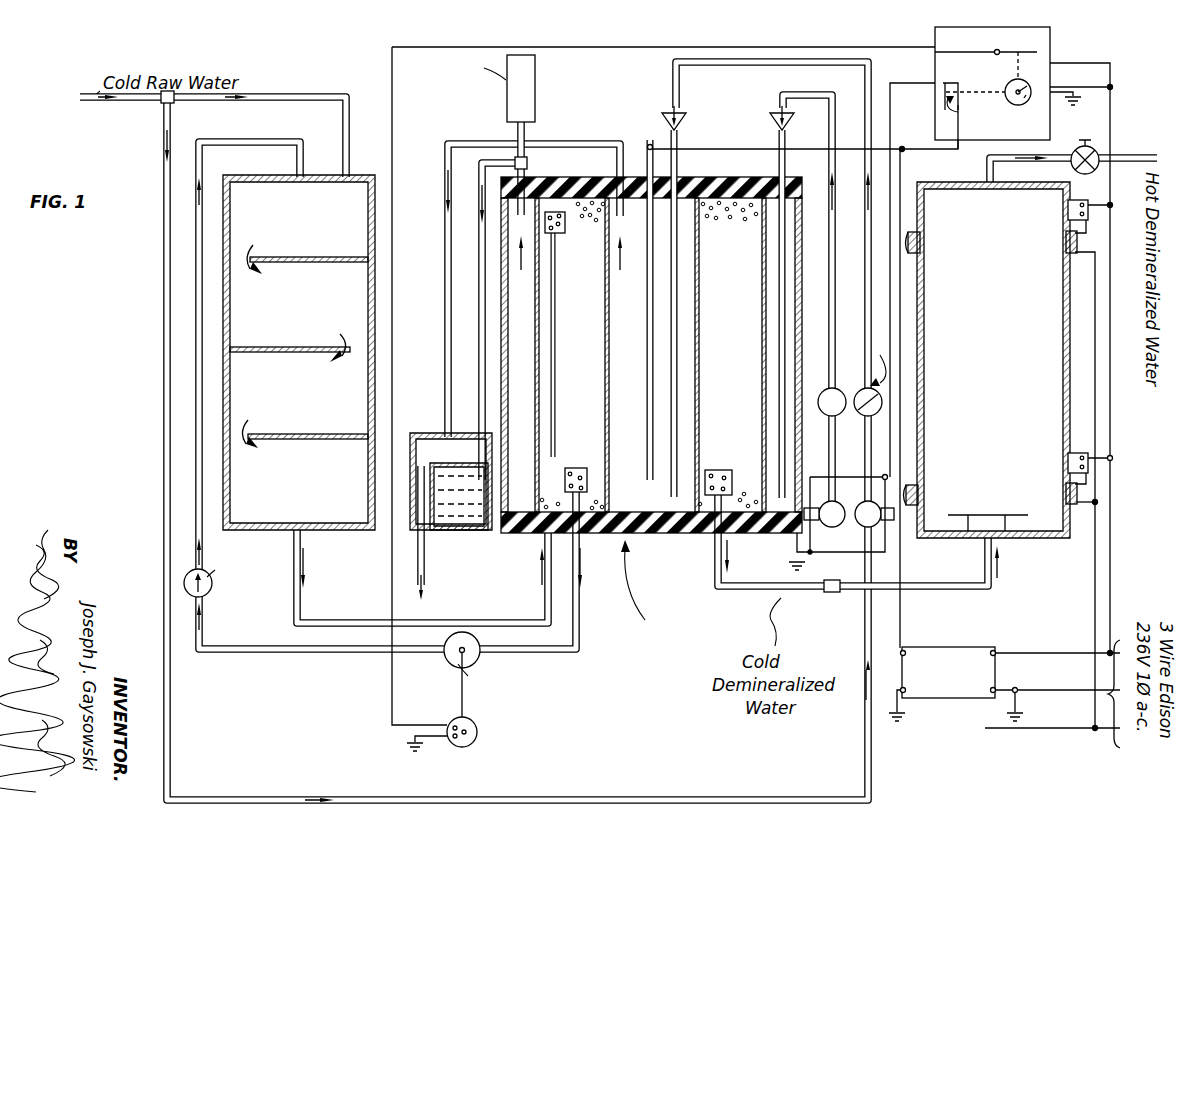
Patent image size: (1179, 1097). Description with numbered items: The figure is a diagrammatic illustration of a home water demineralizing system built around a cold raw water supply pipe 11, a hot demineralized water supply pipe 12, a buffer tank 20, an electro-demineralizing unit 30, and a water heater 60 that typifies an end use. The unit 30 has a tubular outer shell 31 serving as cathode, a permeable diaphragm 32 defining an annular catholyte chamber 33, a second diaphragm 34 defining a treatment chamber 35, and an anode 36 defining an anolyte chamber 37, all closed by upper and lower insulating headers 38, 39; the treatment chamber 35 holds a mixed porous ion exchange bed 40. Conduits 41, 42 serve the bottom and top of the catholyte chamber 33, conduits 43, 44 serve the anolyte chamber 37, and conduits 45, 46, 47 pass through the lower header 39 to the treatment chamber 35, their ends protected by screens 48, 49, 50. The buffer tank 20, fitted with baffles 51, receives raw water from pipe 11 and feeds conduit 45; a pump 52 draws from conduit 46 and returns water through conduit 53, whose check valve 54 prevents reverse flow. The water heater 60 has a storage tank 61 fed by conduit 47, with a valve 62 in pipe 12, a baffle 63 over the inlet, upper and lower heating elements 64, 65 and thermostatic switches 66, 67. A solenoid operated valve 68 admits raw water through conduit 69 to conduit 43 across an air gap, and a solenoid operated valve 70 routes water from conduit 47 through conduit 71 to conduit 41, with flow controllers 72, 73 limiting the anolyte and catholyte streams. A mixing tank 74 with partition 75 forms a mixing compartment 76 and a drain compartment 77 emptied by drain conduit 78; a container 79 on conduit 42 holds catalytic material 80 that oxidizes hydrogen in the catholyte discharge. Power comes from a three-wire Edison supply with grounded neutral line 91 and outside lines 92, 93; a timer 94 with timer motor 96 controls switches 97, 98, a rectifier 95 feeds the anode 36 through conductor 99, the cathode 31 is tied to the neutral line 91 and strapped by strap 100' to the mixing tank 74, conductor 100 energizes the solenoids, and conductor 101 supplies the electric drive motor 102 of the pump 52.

The cold raw water supply pipe 11 is at (296, 97).
The hot demineralized water supply pipe 12 is at (986, 176).
The buffer tank 20 is at (260, 166).
The electro-demineralizing unit 30 is at (727, 168).
The tubular outer shell 31 is at (798, 338).
The tubular permeable diaphragm 32 is at (762, 290).
The catholyte chamber 33 is at (540, 320).
The tubular permeable diaphragm 34 is at (699, 290).
The treatment chamber 35 is at (582, 366).
The anode 36 is at (648, 340).
The anolyte chamber 37 is at (622, 317).
The upper insulating header 38 is at (772, 180).
The lower insulating header 39 is at (647, 533).
The porous ion exchange bed 40 is at (592, 216).
The conduit 41 is at (774, 126).
The conduit 42 is at (526, 175).
The conduit 43 is at (666, 128).
The conduit 44 is at (619, 178).
The conduit 45 is at (298, 604).
The conduit 46 is at (584, 610).
The conduit 47 is at (938, 587).
The screen 48 is at (552, 238).
The screen 49 is at (588, 478).
The screen 50 is at (711, 466).
The baffles 51 is at (324, 256).
The pump 52 is at (447, 662).
The conduit 53 is at (197, 382).
The check valve 54 is at (202, 596).
The water heater 60 is at (996, 394).
The storage tank 61 is at (922, 326).
The valve 62 is at (1082, 148).
The baffle 63 is at (990, 514).
The upper heating element 64 is at (920, 238).
The lower heating element 65 is at (917, 488).
The upper thermostatic switch 66 is at (1068, 207).
The lower thermostatic switch 67 is at (1066, 462).
The solenoid operated valve 68 is at (864, 524).
The conduit 69 is at (673, 95).
The solenoid operated valve 70 is at (828, 504).
The conduit 71 is at (781, 100).
The flow controller 72 is at (868, 390).
The flow controller 73 is at (828, 390).
The mixing tank 74 is at (455, 540).
The internal partition 75 is at (432, 472).
The mixing compartment 76 is at (466, 503).
The drain compartment 77 is at (410, 540).
The drain conduit 78 is at (428, 575).
The container 79 is at (534, 70).
The catalytic material 80 is at (534, 100).
The grounded neutral line 91 is at (418, 744).
The outside ungrounded line 92 is at (1028, 652).
The outside ungrounded line 93 is at (1062, 722).
The timer 94 is at (938, 52).
The rectifier 95 is at (936, 634).
The electric timer motor 96 is at (1012, 86).
The switch 97 is at (959, 109).
The switch 98 is at (1034, 64).
The conductor 99 is at (722, 148).
The conductor 100 is at (871, 312).
The wire 100' is at (505, 556).
The conductor 101 is at (704, 50).
The electric drive motor 102 is at (466, 735).